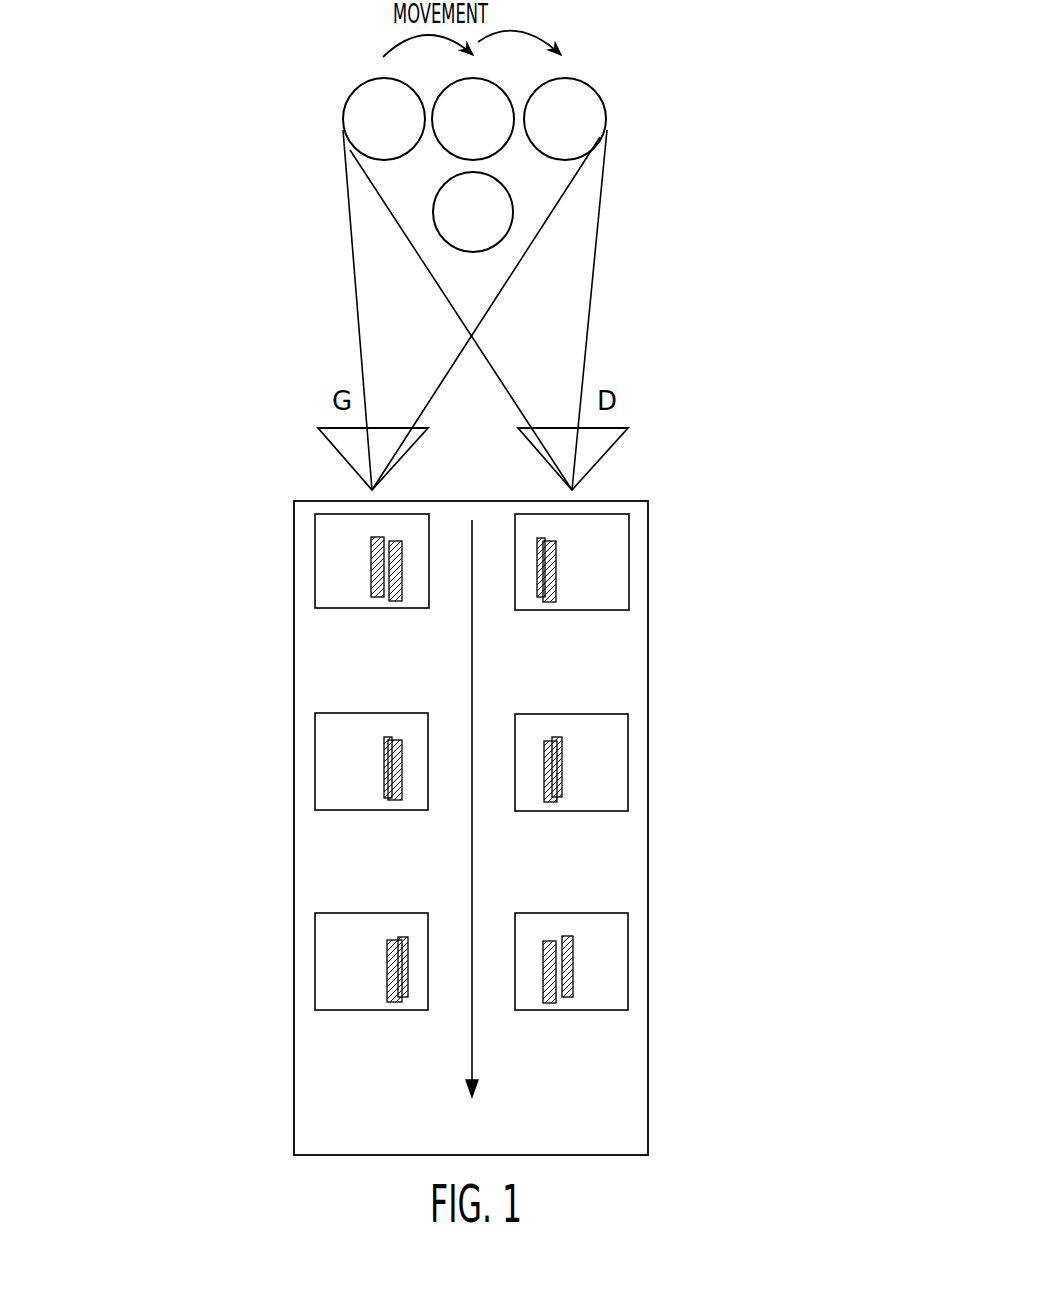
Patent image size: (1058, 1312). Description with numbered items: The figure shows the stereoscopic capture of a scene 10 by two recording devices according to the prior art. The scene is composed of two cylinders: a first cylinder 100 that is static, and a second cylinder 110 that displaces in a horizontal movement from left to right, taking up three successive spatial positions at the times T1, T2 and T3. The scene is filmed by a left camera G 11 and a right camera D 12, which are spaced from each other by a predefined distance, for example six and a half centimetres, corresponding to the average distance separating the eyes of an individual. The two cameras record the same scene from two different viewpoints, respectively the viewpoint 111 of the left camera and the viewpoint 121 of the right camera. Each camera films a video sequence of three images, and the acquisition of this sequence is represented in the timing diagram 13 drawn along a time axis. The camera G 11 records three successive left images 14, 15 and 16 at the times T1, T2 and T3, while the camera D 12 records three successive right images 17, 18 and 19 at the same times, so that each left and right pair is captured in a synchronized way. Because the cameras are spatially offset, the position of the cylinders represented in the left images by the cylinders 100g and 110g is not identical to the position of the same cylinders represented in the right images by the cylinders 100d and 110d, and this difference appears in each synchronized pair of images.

The scene 10 is at (640, 88).
The second cylinder 110 is at (343, 110).
The first cylinder 100 is at (512, 218).
The viewpoint of left camera 111 is at (367, 295).
The viewpoint of right camera 121 is at (573, 333).
The left camera G 11 is at (337, 453).
The right camera D 12 is at (612, 455).
The timing diagram 13 is at (293, 1083).
The left image 14 is at (313, 544).
The left image 15 is at (315, 739).
The left image 16 is at (315, 947).
The right image 17 is at (629, 601).
The right image 18 is at (628, 758).
The right image 19 is at (628, 968).
The cylinder in left image 110g is at (373, 567).
The cylinder in left image 100g is at (393, 601).
The cylinder in right image 110d is at (546, 538).
The cylinder in right image 100d is at (552, 567).